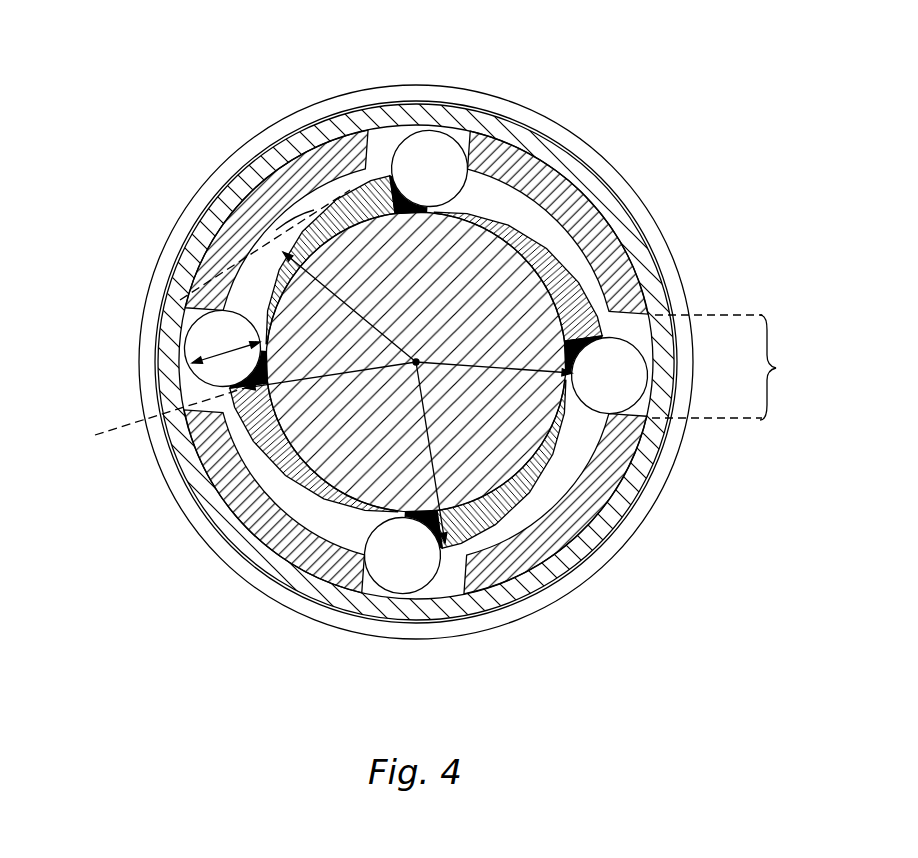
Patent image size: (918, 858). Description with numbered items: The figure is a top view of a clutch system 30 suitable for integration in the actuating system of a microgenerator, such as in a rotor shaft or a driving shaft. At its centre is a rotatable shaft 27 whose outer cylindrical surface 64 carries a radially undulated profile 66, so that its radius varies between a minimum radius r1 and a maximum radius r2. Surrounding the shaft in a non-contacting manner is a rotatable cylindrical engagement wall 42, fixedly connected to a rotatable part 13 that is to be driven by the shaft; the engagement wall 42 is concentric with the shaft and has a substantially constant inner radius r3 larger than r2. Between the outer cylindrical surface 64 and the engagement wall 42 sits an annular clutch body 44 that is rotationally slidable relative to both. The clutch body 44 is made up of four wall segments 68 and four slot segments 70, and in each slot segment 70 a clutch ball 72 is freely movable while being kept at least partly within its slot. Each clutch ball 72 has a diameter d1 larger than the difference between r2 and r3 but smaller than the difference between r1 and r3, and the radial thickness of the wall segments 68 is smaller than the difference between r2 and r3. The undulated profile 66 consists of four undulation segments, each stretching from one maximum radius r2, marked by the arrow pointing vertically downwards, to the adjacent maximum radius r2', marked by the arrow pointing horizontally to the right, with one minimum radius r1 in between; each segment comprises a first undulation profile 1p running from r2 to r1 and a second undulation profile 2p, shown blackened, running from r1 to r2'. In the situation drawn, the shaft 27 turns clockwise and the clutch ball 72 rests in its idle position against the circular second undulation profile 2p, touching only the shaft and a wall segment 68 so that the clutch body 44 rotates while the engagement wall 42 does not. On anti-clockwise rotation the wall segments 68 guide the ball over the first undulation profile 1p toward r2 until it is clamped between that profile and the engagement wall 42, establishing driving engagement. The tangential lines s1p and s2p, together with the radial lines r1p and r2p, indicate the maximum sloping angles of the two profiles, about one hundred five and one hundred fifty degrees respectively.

The rotatable part 13 is at (543, 123).
The cylindrical engagement wall 42 is at (488, 130).
The rotatable shaft 27 is at (416, 362).
The clutch body 44 is at (300, 560).
The wall segments 68 is at (232, 178).
The clutch ball 72 is at (403, 560).
The outer cylindrical surface 64 is at (515, 225).
The radially undulated profile 66 is at (567, 195).
The clutch system 30 is at (738, 106).
The slot segments 70 is at (729, 367).
The minimum radius r1 is at (598, 410).
The radial line r1p is at (262, 262).
The maximum radius r2 is at (480, 528).
The radial line r2p is at (295, 503).
The adjacent maximum radius r2' is at (668, 269).
The inner radius r3 is at (553, 470).
The tangential line s1p is at (253, 257).
The tangential line s2p is at (128, 438).
The first undulation profile 1p is at (320, 245).
The second undulation profile 2p is at (358, 122).
The clutch ball diameter d1 is at (195, 358).